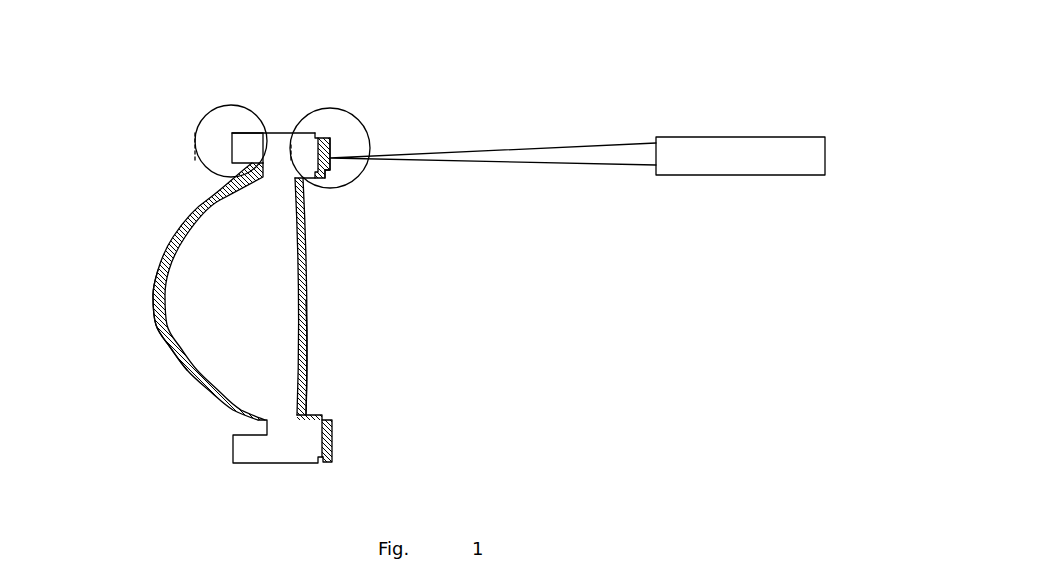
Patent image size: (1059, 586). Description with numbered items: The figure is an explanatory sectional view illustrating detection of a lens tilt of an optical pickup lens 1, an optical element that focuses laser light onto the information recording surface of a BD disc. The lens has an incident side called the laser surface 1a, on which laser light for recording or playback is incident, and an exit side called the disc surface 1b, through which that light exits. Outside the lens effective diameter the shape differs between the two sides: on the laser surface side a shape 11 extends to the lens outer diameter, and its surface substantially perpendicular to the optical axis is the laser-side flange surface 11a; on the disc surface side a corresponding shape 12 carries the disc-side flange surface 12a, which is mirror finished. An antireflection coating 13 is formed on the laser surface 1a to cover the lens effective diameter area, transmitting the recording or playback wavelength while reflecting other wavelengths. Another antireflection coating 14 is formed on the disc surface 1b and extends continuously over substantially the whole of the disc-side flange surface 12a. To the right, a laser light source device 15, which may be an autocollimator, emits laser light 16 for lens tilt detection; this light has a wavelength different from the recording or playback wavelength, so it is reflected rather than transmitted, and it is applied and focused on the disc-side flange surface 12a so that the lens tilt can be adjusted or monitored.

The optical pickup lens 1 is at (330, 88).
The laser surface 1a is at (153, 300).
The disc surface 1b is at (305, 295).
The laser surface side shape 11 is at (200, 140).
The laser-side flange surface 11a is at (232, 141).
The disc surface side shape 12 is at (358, 130).
The disc-side flange surface 12a is at (331, 168).
The antireflection coating 13 is at (170, 350).
The antireflection coating 14 is at (306, 380).
The laser light source device 15 is at (790, 168).
The laser light for lens tilt detection 16 is at (553, 162).